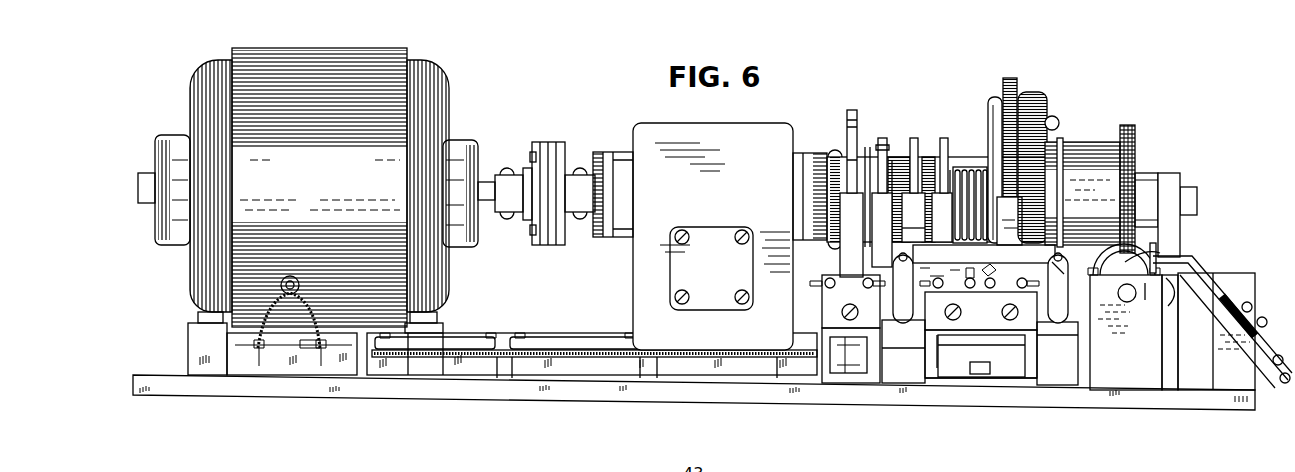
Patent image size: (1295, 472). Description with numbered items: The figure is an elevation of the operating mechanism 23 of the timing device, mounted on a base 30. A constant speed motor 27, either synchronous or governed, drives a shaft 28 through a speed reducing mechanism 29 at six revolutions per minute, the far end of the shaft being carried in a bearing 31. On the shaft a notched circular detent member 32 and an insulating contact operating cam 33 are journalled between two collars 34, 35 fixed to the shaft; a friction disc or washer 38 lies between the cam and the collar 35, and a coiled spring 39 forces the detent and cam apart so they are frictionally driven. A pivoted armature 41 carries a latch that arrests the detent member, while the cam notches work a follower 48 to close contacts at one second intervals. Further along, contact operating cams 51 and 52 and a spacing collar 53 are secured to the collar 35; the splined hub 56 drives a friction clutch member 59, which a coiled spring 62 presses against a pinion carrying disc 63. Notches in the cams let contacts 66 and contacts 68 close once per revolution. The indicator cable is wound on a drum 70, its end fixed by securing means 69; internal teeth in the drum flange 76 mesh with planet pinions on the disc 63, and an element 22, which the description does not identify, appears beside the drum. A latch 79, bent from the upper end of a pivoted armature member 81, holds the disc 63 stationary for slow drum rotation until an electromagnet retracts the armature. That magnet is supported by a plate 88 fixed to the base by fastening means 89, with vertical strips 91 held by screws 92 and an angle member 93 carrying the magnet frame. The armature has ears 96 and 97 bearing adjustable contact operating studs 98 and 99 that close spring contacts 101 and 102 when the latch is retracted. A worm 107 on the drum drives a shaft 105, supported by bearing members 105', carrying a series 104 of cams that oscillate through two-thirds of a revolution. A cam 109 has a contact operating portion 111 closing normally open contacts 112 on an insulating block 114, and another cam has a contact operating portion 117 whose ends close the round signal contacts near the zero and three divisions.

The plate 22 is at (1061, 150).
The operating mechanism 23 is at (689, 409).
The constant speed motor 27 is at (297, 78).
The shaft 28 is at (815, 186).
The speed reducing mechanism 29 is at (655, 141).
The base 30 is at (523, 385).
The bearing 31 is at (1172, 178).
The notched circular detent member 32 is at (852, 112).
The contact operating cam 33 is at (888, 125).
The collar 34 is at (838, 160).
The collar 35 is at (900, 163).
The friction disc or washer 38 is at (890, 160).
The coiled spring 39 is at (871, 147).
The pivoted armature 41 is at (852, 247).
The follower 48 is at (883, 230).
The contact operating cam 51 is at (917, 165).
The contact operating cam 52 is at (944, 165).
The spacing collar 53 is at (926, 165).
The hub 56 is at (950, 170).
The friction clutch member 59 is at (992, 110).
The coiled spring 62 is at (960, 180).
The pinion carrying disc 63 is at (1010, 78).
The contacts 66 is at (944, 217).
The contacts 68 is at (913, 217).
The securing means 69 is at (1055, 128).
The drum 70 is at (1095, 158).
The flange 76 is at (1030, 105).
The latch 79 is at (1012, 200).
The pivoted armature member 81 is at (947, 255).
The plate 88 is at (1015, 380).
The fastening means 89 is at (977, 377).
The vertically disposed strips 91 is at (936, 370).
The screws 92 is at (927, 325).
The angle member 93 is at (985, 317).
The ear 96 is at (913, 230).
The ear 97 is at (1062, 276).
The contact operating stud 98 is at (963, 284).
The contact operating stud 99 is at (1068, 288).
The spring contacts 101 is at (897, 297).
The spring contacts 102 is at (1060, 343).
The series of contact operating cams 104 is at (898, 372).
The shaft 105 is at (1126, 332).
The bearing members 105' is at (1153, 299).
The worm 107 is at (1128, 130).
The cam 109 is at (1118, 262).
The contact operating portion 111 is at (1172, 292).
The contacts 112 is at (1205, 283).
The block of insulating material 114 is at (1230, 375).
The contact operating portion 117 is at (1137, 253).